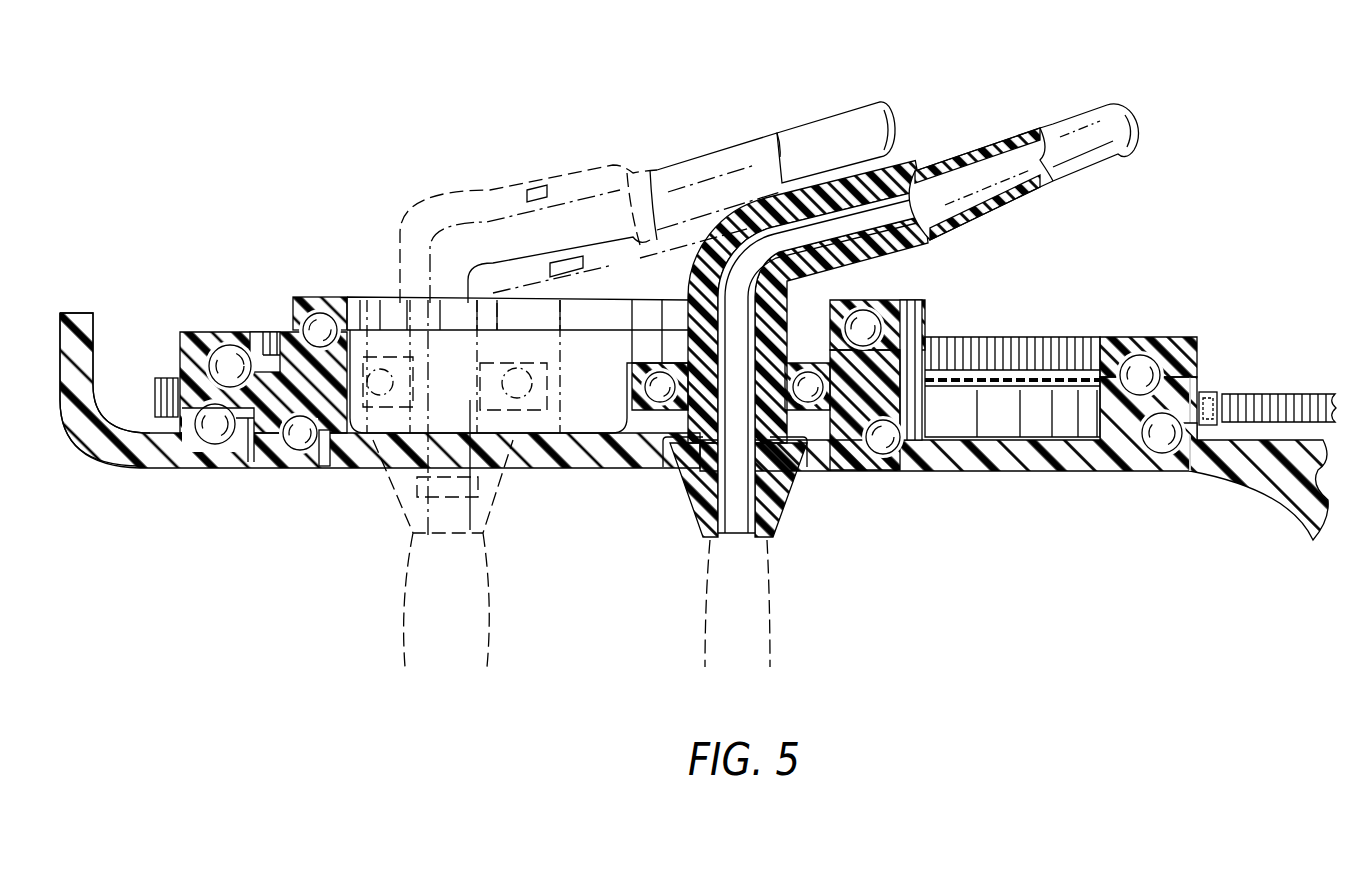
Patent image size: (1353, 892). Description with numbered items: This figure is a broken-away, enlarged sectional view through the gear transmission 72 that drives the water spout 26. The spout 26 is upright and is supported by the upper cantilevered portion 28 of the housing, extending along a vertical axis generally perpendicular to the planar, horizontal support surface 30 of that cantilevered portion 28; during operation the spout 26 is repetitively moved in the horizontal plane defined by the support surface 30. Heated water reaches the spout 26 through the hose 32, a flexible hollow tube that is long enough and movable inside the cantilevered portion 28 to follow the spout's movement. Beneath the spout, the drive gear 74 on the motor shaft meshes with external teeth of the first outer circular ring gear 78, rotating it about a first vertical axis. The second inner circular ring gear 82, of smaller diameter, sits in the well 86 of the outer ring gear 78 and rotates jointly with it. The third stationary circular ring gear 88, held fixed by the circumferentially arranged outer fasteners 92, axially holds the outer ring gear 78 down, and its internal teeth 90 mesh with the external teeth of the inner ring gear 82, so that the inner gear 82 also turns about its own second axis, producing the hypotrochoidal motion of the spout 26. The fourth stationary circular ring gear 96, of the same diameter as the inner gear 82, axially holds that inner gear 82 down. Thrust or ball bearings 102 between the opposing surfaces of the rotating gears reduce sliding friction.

The spout 26 is at (786, 507).
The upper cantilevered portion 28 is at (72, 313).
The support surface 30 is at (157, 462).
The hose 32 is at (1000, 152).
The gear transmission 72 is at (256, 265).
The drive gear 74 is at (1273, 394).
The first outer circular ring gear 78 is at (1067, 465).
The second inner circular ring gear 82 is at (840, 470).
The well 86 is at (322, 468).
The third stationary circular ring gear 88 is at (1112, 337).
The internal teeth 90 is at (1052, 345).
The outer fasteners 92 is at (928, 306).
The fourth stationary circular ring gear 96 is at (333, 297).
The ball bearings 102 is at (312, 316).